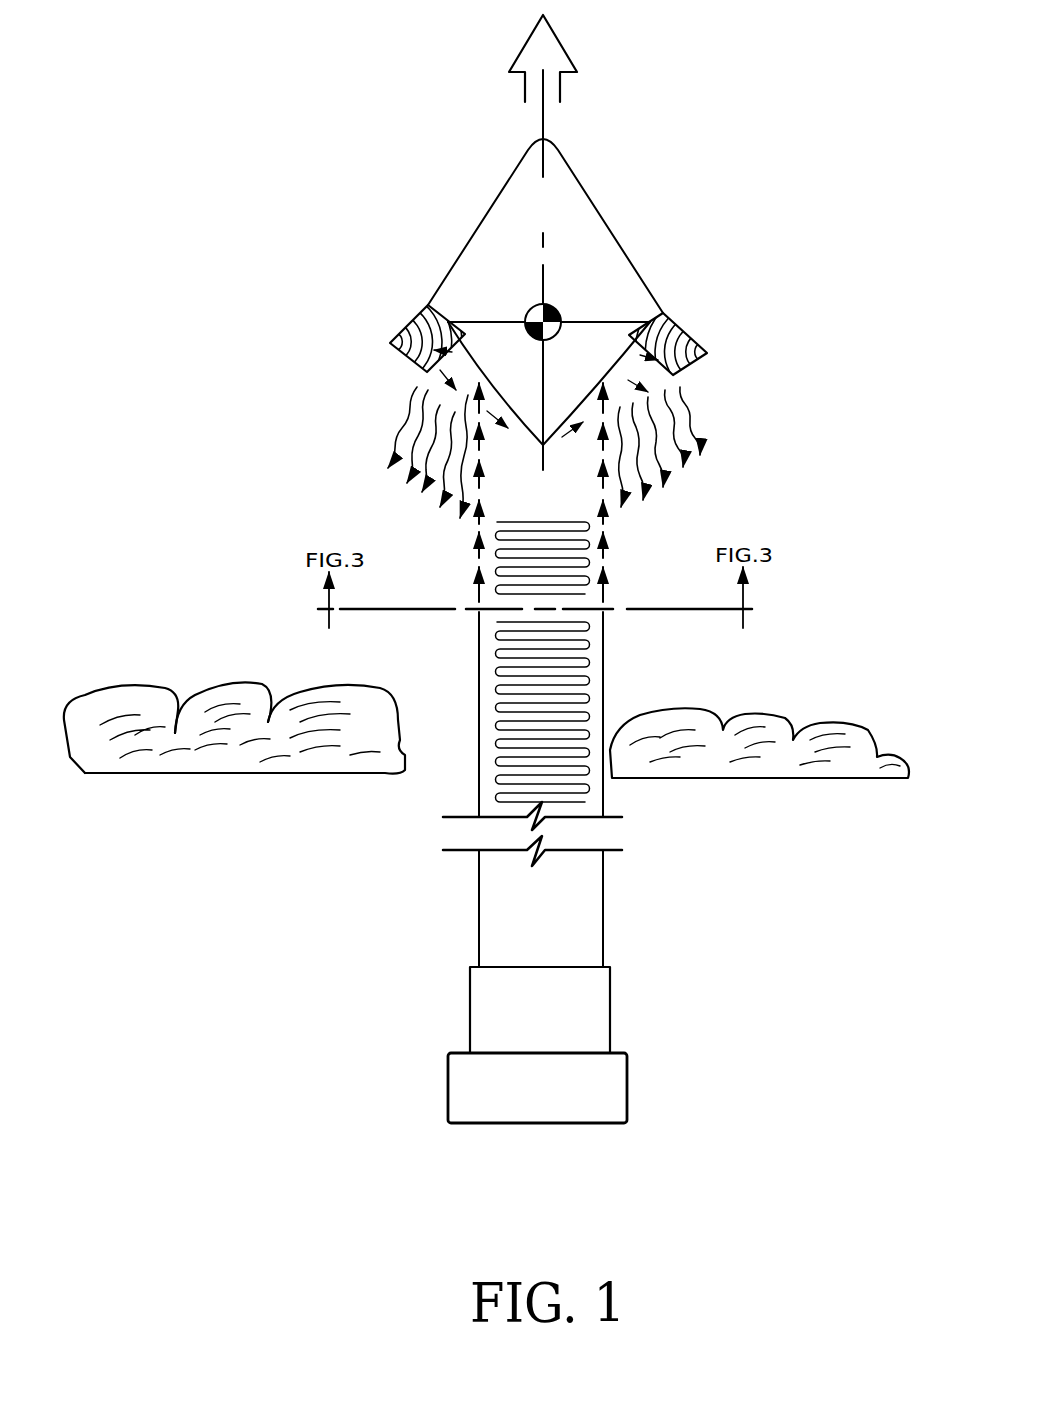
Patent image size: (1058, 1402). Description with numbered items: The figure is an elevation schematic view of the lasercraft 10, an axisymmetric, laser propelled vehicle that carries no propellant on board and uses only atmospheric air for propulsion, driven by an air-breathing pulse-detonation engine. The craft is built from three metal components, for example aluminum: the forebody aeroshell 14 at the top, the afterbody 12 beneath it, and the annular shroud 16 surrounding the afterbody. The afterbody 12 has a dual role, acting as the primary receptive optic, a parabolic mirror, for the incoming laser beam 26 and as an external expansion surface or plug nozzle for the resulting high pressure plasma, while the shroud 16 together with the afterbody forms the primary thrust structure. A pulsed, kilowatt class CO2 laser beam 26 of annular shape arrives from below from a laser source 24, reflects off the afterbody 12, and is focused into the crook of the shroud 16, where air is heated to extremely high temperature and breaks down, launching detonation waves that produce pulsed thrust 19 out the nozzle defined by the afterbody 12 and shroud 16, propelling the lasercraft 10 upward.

The lasercraft 10 is at (458, 188).
The afterbody 12 is at (612, 403).
The forebody aeroshell 14 is at (593, 218).
The annular shroud 16 is at (680, 335).
The pulsed thrust 19 is at (672, 486).
The laser source 24 is at (628, 1005).
The laser beam 26 is at (583, 627).